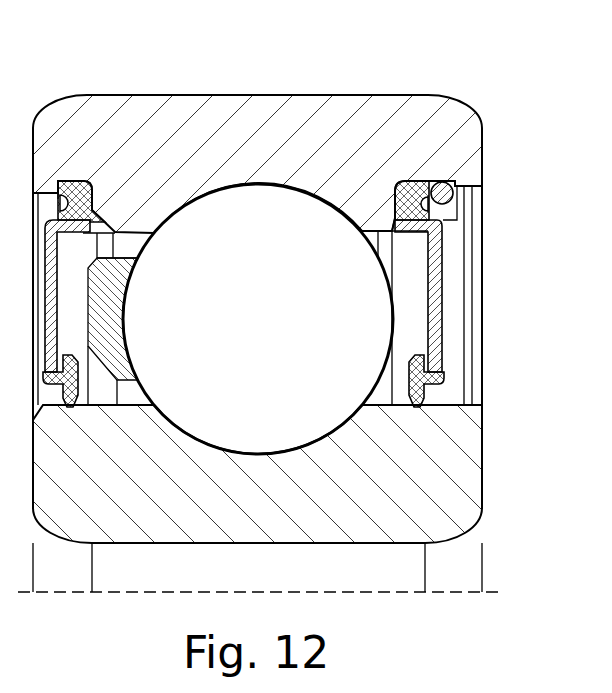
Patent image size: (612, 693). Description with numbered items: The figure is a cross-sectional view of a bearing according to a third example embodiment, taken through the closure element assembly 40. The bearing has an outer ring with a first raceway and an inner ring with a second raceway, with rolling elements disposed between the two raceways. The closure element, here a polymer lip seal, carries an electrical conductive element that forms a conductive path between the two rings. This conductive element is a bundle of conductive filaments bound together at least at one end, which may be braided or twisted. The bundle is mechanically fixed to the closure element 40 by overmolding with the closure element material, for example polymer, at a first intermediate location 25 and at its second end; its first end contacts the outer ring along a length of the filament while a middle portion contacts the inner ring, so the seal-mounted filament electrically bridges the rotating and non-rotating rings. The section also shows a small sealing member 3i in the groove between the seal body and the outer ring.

The sealing element / o-ring 3i is at (470, 187).
The first intermediate location 25 is at (452, 292).
The seal reinforcement insert 40 is at (442, 328).